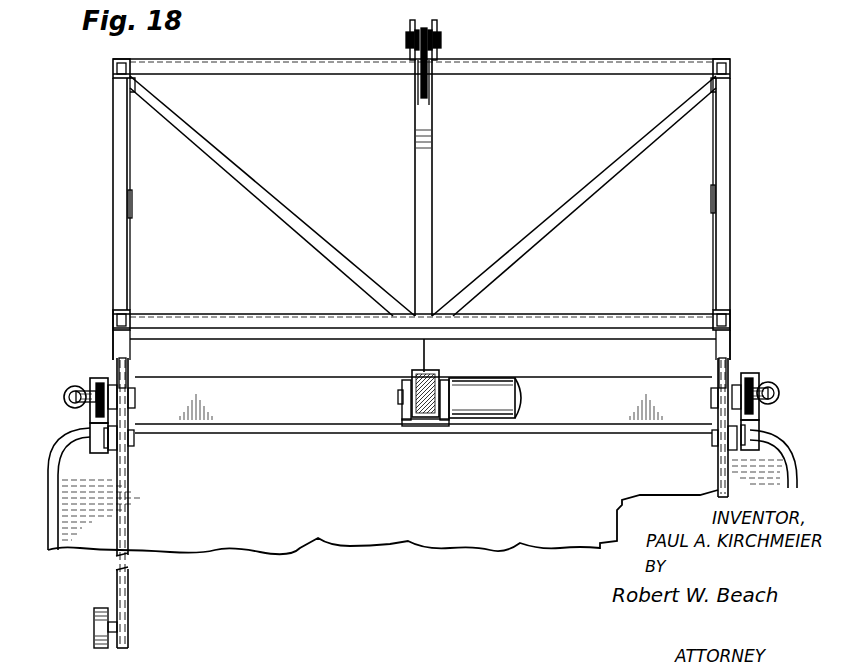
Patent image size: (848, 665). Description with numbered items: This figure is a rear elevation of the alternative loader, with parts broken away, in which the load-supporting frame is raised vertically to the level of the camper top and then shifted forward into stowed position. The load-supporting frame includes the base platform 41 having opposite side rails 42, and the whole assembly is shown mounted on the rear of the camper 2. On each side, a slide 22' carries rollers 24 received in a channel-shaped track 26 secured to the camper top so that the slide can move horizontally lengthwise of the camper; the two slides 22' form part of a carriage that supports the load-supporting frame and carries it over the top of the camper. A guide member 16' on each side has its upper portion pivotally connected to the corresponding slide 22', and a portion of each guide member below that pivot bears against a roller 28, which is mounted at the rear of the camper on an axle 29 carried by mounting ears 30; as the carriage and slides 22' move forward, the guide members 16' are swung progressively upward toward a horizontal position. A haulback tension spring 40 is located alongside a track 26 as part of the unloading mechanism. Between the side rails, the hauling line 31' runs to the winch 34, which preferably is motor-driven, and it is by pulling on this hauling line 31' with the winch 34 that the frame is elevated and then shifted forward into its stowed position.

The wall / floor structure 2 is at (48, 446).
The guide member 16' is at (443, 503).
The slide 22' is at (423, 379).
The roller 24 is at (100, 406).
The channel-shaped track 26 is at (97, 378).
The roller 28 is at (128, 448).
The axle 29 is at (134, 438).
The mounting ears 30 is at (102, 453).
The hauling line 31' is at (404, 382).
The winch 34 is at (500, 382).
The haulback tension spring 40 is at (66, 392).
The base platform 41 is at (113, 320).
The side rails 42 is at (113, 68).